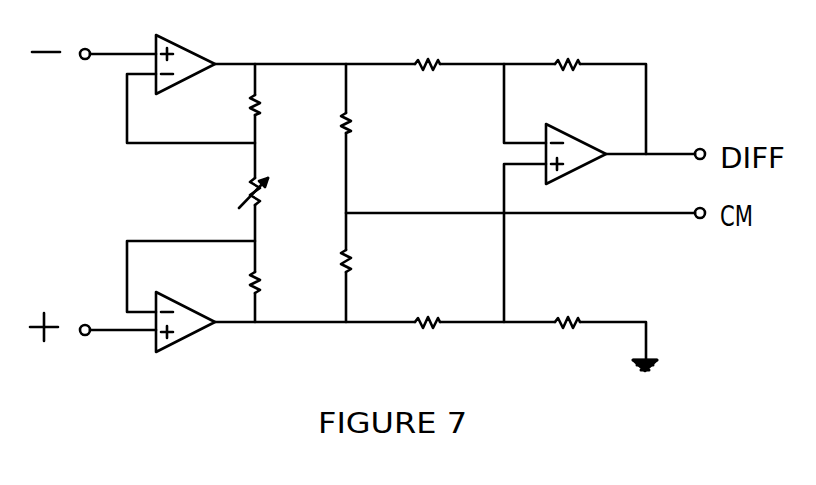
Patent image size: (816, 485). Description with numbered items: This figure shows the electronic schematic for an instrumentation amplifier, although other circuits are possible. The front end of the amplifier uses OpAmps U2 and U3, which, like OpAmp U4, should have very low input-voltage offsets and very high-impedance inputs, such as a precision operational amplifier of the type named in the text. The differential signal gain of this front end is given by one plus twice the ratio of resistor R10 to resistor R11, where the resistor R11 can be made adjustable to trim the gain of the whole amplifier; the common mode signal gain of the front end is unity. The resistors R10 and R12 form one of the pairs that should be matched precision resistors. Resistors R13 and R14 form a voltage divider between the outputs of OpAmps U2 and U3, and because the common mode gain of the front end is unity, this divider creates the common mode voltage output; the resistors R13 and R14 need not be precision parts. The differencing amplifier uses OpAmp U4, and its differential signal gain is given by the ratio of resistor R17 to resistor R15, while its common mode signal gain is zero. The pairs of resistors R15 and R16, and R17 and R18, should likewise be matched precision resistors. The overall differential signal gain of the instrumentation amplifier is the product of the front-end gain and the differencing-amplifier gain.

The OpAmp U2 is at (191, 78).
The OpAmp U3 is at (191, 296).
The OpAmp U4 is at (576, 144).
The resistor R10 is at (283, 105).
The resistor R11 is at (279, 196).
The resistor R12 is at (284, 283).
The resistor R13 is at (375, 127).
The resistor R14 is at (375, 263).
The resistor R15 is at (426, 49).
The resistor R16 is at (425, 307).
The resistor R17 is at (565, 49).
The resistor R18 is at (565, 307).